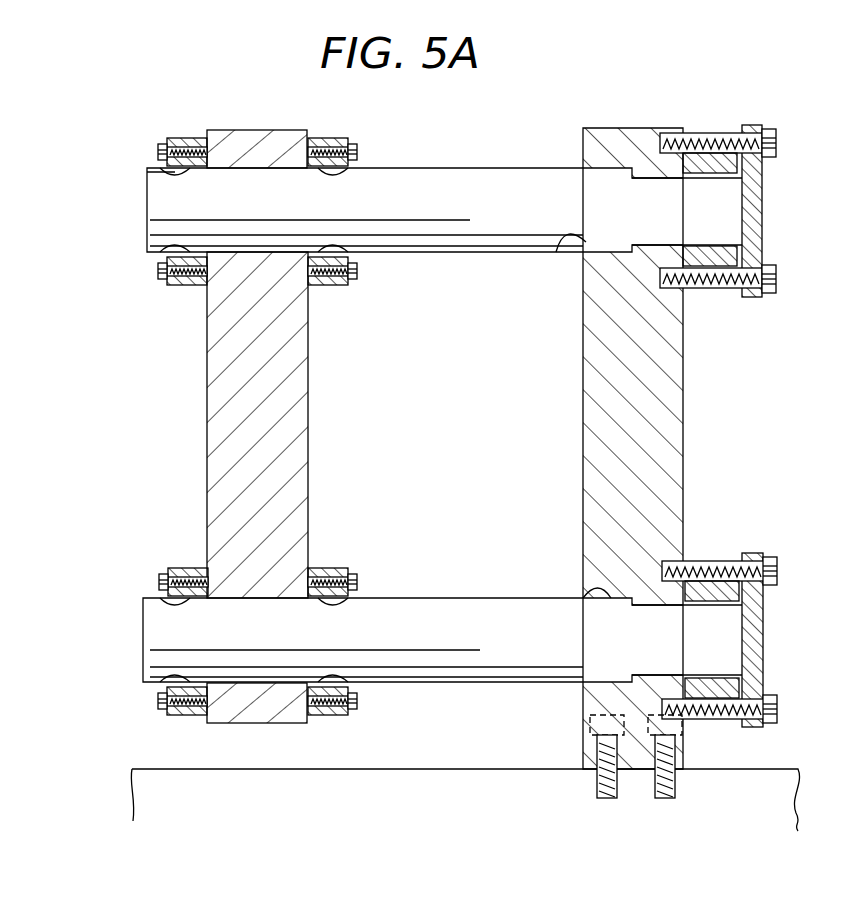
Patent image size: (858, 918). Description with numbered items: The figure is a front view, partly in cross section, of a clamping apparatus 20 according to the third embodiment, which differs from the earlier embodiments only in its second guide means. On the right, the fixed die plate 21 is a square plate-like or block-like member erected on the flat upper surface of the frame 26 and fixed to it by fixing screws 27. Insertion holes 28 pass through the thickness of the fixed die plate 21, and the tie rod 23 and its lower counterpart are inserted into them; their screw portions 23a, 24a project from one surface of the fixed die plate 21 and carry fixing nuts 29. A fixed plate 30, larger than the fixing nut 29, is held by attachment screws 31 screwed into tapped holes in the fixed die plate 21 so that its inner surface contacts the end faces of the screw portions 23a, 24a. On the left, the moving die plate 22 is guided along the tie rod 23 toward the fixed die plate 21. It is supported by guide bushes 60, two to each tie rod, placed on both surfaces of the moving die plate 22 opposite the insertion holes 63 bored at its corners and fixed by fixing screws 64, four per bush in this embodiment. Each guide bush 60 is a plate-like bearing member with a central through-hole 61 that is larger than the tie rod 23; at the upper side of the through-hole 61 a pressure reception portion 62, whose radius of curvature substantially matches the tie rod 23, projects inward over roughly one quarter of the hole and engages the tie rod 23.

The clamping apparatus 20 is at (517, 146).
The fixed die plate 21 is at (672, 432).
The moving die plate 22 is at (215, 432).
The tie rod 23 is at (471, 235).
The screw portion 23a is at (644, 196).
The screw portion 24a is at (725, 650).
The frame 26 is at (784, 768).
The fixing screws 27 is at (608, 800).
The insertion holes 28 is at (564, 250).
The fixing nut 29 is at (708, 146).
The fixed plate 30 is at (755, 218).
The attachment screws 31 is at (776, 142).
The guide bush 60 is at (185, 140).
The through-hole 61 is at (173, 242).
The pressure reception portion 62 is at (338, 170).
The insertion holes 63 is at (248, 148).
The fixing screws 64 is at (164, 148).